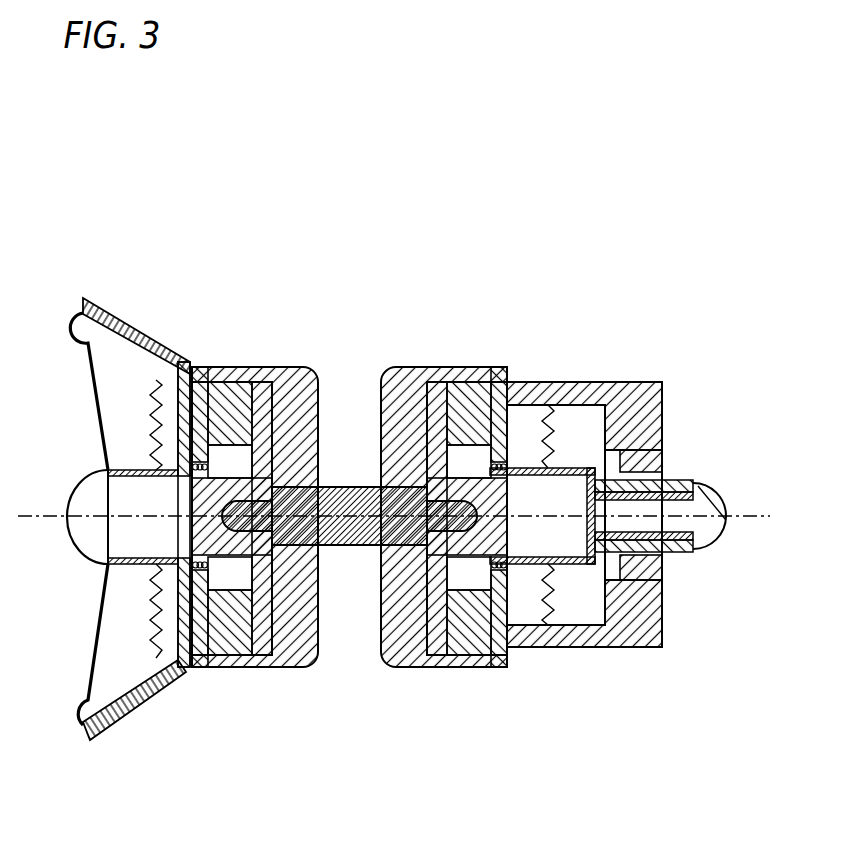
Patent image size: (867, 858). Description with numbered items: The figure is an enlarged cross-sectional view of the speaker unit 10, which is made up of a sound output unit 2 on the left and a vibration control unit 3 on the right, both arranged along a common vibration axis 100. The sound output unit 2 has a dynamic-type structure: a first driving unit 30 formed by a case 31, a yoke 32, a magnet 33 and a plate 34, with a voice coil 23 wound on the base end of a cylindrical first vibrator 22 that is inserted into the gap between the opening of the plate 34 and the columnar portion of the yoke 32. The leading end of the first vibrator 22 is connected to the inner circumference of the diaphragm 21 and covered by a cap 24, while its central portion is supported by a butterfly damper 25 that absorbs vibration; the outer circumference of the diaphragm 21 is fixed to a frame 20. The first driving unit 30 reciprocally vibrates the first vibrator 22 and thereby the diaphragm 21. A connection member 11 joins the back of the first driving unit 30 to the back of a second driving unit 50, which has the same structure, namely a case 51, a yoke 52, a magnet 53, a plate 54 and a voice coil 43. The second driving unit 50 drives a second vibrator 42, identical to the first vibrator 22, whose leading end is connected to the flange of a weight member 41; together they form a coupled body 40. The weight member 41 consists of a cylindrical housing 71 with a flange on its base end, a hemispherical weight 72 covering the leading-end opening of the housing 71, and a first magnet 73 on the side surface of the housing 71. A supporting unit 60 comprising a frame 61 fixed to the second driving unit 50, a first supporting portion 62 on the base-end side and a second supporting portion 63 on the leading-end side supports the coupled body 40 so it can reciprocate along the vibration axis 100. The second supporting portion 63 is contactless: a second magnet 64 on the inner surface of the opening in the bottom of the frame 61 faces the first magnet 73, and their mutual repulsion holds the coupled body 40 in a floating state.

The sound output unit 2 is at (318, 778).
The vibration control unit 3 is at (743, 778).
The speaker unit 10 is at (384, 246).
The connection member 11 is at (348, 487).
The frame 20 is at (85, 735).
The diaphragm 21 is at (88, 400).
The first vibrator 22 is at (127, 468).
The voice coil 23 is at (193, 462).
The cap 24 is at (70, 540).
The butterfly damper 25 is at (151, 662).
The first driving unit 30 is at (255, 348).
The case 31 is at (302, 667).
The yoke 32 is at (258, 652).
The magnet 33 is at (228, 650).
The plate 34 is at (197, 660).
The coupled body 40 is at (707, 706).
The weight member 41 is at (680, 556).
The second vibrator 42 is at (577, 563).
The voice coil 43 is at (496, 462).
The second driving unit 50 is at (438, 348).
The case 51 is at (390, 667).
The yoke 52 is at (435, 652).
The magnet 53 is at (464, 652).
The plate 54 is at (498, 652).
The supporting unit 60 is at (598, 333).
The frame 61 is at (614, 385).
The first supporting portion 62 is at (549, 415).
The second supporting portion 63 is at (690, 456).
The second magnet 64 is at (662, 458).
The housing 71 is at (694, 548).
The hemispherical weight 72 is at (724, 493).
The first magnet 73 is at (680, 483).
The vibration axis 100 is at (24, 500).